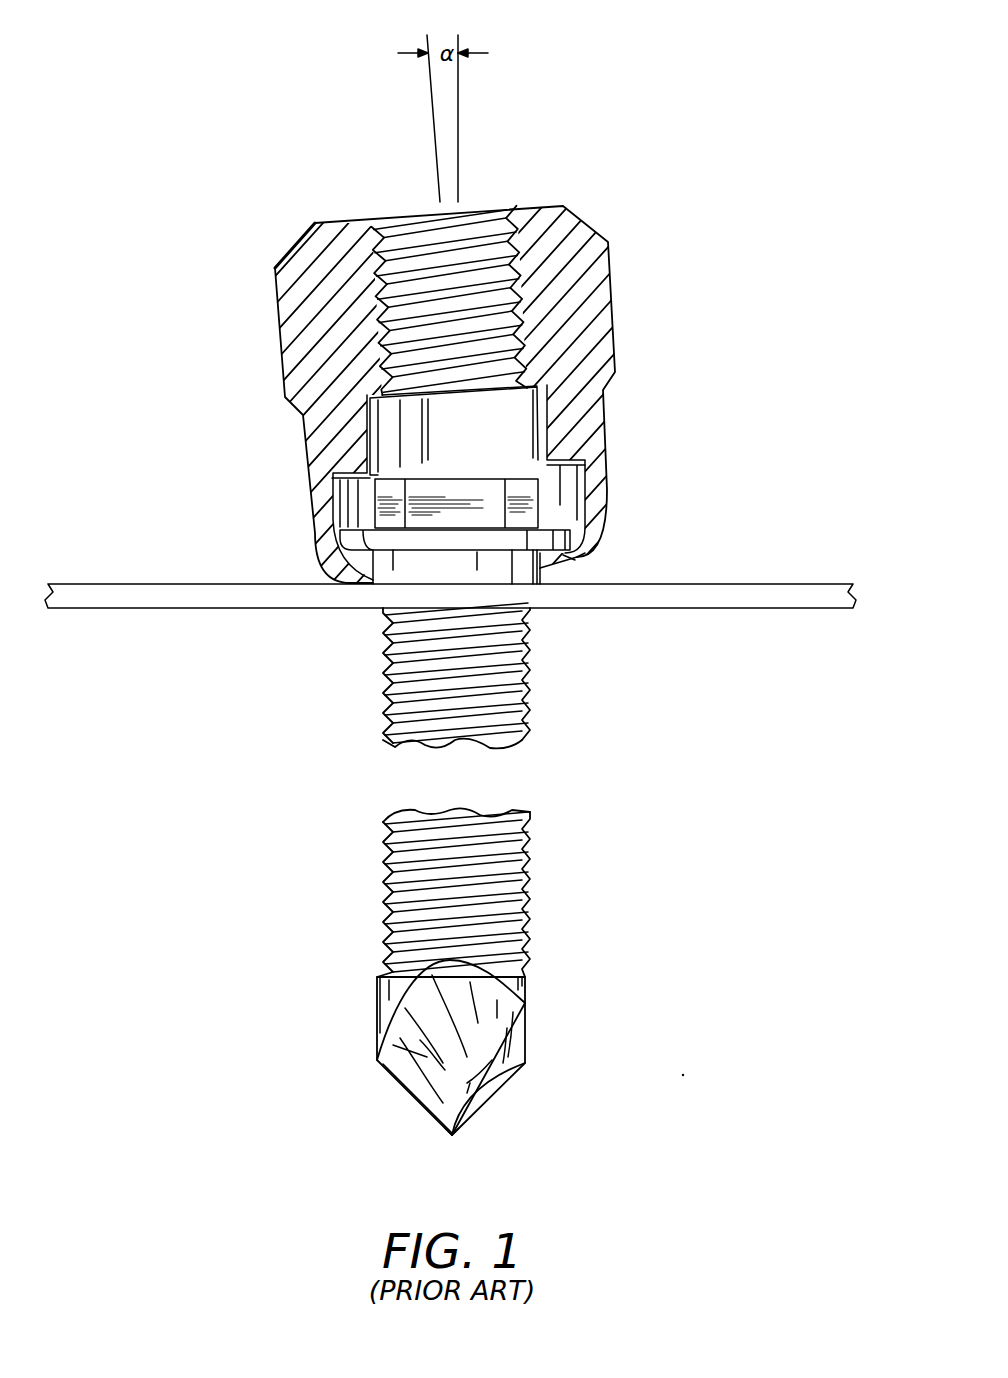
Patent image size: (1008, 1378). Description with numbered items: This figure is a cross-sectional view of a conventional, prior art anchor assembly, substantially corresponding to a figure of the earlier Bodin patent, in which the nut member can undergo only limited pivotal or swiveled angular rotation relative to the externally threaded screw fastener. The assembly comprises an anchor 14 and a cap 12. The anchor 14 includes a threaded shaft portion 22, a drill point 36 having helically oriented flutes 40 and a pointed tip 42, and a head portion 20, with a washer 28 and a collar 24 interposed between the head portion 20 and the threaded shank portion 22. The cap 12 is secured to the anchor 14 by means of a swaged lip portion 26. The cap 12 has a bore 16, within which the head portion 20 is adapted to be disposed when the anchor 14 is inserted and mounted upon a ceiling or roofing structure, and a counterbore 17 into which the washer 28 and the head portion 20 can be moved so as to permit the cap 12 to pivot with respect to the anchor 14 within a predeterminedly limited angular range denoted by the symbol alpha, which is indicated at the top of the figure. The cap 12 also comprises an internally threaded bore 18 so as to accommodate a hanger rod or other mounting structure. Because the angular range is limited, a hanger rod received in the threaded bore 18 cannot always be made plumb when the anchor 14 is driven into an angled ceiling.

The cap 12 is at (668, 265).
The anchor 14 is at (372, 629).
The bore 16 is at (410, 432).
The counterbore 17 is at (348, 500).
The internally threaded bore 18 is at (416, 245).
The head portion 20 is at (505, 498).
The threaded shaft portion 22 is at (532, 860).
The collar 24 is at (427, 565).
The swaged lip portion 26 is at (578, 558).
The washer 28 is at (567, 540).
The drill point 36 is at (487, 1100).
The helically oriented flutes 40 is at (425, 1057).
The pointed tip 42 is at (452, 1135).